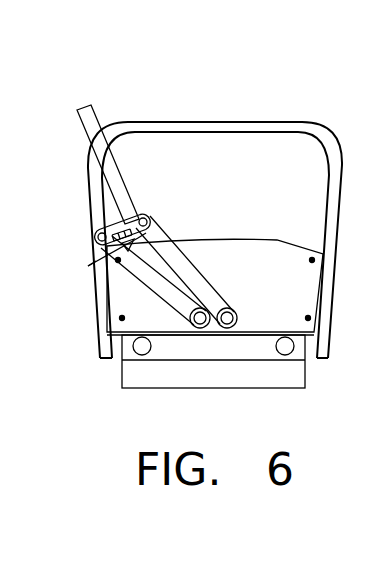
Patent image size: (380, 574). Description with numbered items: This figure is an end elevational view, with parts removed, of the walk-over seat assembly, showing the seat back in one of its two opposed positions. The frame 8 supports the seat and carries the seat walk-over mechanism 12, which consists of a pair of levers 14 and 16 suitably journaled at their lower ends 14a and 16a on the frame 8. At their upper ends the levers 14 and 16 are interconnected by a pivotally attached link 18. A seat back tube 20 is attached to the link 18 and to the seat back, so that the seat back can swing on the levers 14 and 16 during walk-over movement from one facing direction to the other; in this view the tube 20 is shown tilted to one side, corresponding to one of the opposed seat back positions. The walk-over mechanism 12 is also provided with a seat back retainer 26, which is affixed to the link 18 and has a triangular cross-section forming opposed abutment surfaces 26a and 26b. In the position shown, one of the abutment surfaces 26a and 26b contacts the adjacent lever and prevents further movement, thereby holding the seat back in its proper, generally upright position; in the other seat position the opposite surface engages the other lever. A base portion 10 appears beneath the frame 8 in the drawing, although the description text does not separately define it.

The frame 8 is at (312, 292).
The base 10 is at (288, 377).
The seat walk-over mechanism 12 is at (194, 236).
The lever 14 is at (187, 273).
The lower end of lever 14a is at (237, 310).
The lever 16 is at (137, 265).
The lower end of lever 16a is at (202, 328).
The link 18 is at (128, 210).
The seat back tube 20 is at (86, 132).
The seat back retainer 26 is at (102, 248).
The abutment surface 26a is at (107, 254).
The abutment surface 26b is at (157, 225).